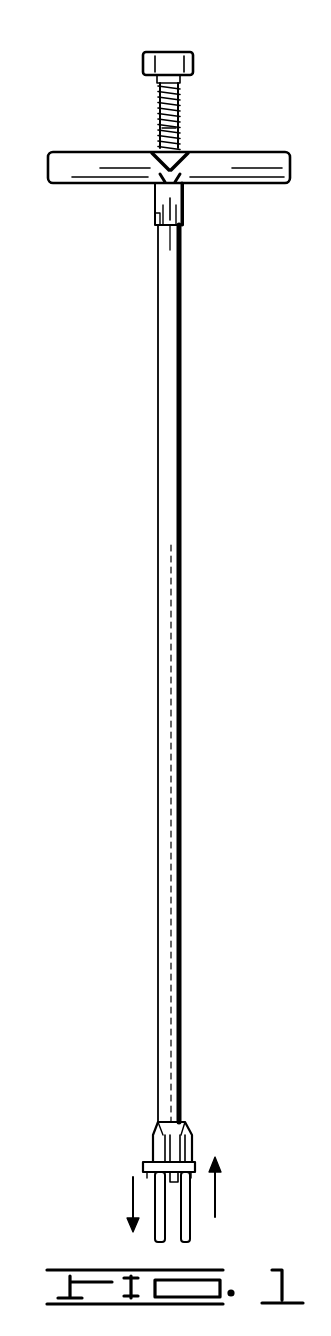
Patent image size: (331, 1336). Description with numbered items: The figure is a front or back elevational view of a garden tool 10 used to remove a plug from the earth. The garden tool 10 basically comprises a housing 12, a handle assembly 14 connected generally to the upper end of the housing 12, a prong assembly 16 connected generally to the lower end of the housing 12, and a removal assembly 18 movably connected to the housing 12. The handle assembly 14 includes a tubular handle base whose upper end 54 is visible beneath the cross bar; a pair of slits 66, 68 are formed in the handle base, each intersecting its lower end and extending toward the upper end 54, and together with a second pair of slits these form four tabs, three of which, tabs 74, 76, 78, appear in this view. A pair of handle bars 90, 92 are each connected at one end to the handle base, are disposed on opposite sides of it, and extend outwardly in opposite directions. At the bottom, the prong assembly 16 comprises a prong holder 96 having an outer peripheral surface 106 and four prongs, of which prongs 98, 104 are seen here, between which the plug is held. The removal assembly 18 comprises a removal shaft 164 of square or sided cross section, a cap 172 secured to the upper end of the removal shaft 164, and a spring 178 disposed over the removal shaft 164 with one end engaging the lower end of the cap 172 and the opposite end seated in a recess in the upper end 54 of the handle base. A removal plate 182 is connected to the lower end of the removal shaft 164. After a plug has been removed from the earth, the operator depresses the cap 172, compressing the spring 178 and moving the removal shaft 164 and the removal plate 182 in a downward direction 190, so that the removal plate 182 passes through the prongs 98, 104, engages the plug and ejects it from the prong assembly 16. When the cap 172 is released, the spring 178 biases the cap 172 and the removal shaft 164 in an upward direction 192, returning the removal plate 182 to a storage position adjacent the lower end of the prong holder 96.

The garden tool 10 is at (200, 456).
The housing 12 is at (185, 600).
The handle assembly 14 is at (214, 146).
The prong assembly 16 is at (200, 1127).
The removal assembly 18 is at (202, 1183).
The upper end of handle base 54 is at (181, 195).
The slit 66 is at (163, 218).
The slit 68 is at (182, 226).
The tab 74 is at (157, 221).
The tab 76 is at (182, 250).
The tab 78 is at (181, 206).
The handle bar 90 is at (101, 161).
The handle bar 92 is at (261, 160).
The prong holder 96 is at (153, 1140).
The prong 98 is at (155, 1232).
The prong 104 is at (190, 1230).
The outer peripheral surface 106 is at (143, 1165).
The removal shaft 164 is at (161, 110).
The cap 172 is at (172, 62).
The spring 178 is at (158, 135).
The removal plate 182 is at (176, 1181).
The downward direction 190 is at (130, 1191).
The upward direction 192 is at (220, 1180).